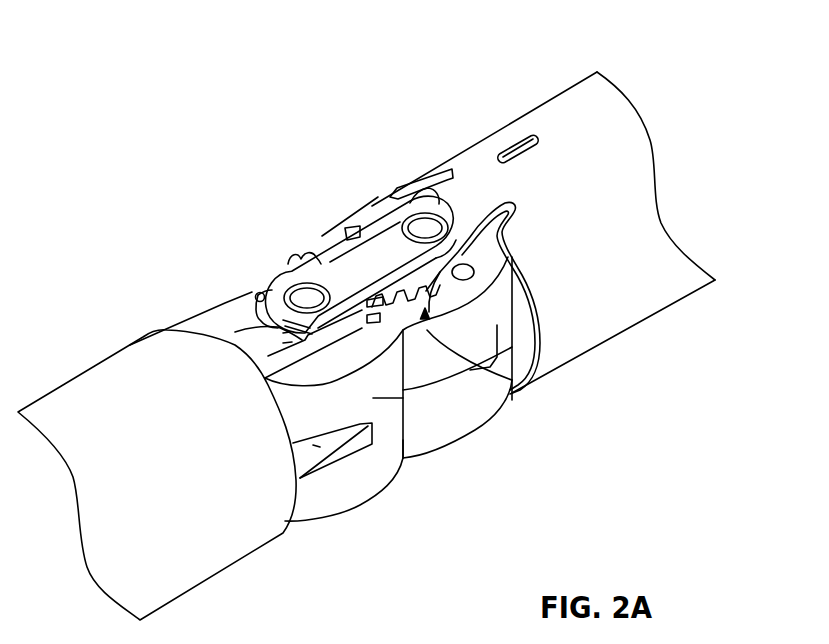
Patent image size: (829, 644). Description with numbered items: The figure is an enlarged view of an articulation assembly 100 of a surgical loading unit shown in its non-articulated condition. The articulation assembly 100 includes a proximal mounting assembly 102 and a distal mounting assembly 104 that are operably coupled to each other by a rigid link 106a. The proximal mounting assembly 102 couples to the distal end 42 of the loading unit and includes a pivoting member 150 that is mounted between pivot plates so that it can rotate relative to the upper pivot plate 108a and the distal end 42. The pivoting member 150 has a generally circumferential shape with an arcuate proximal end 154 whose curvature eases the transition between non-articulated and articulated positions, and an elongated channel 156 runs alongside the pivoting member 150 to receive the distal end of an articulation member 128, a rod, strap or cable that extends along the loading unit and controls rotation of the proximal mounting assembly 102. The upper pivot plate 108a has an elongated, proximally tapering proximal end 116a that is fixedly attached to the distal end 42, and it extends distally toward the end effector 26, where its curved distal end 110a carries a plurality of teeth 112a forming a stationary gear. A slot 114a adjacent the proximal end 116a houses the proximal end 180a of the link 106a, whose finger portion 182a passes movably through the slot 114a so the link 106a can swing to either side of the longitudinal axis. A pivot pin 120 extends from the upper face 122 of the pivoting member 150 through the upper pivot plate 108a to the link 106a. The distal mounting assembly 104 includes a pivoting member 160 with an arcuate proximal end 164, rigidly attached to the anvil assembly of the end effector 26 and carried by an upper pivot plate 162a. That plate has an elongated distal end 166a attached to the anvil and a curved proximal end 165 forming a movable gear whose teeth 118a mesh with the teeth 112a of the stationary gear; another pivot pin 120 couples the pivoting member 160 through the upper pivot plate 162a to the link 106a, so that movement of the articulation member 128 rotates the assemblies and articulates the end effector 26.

The end effector 26 is at (522, 62).
The distal end of the loading unit 42 is at (143, 337).
The articulation assembly 100 is at (233, 122).
The proximal mounting assembly 102 is at (135, 242).
The distal mounting assembly 104 is at (368, 155).
The link 106a is at (345, 270).
The upper pivot plate 108a is at (258, 291).
The circumferential distal end 110a is at (281, 268).
The teeth 112a is at (293, 262).
The slot 114a is at (261, 316).
The proximal end of upper pivot plate 116a is at (222, 335).
The teeth 118a is at (513, 388).
The pivot pin 120 is at (424, 222).
The upper face of pivoting member 122 is at (367, 355).
The articulation member 128 is at (312, 450).
The pivoting member 150 is at (373, 398).
The proximal end of pivoting member 154 is at (365, 430).
The elongated channel 156 is at (403, 458).
The pivoting member 160 is at (493, 310).
The upper pivot plate 162a is at (477, 197).
The proximal end of pivoting member 164 is at (437, 393).
The circumferential proximal end 165 is at (360, 227).
The distal end of upper pivot plate 166a is at (453, 205).
The proximal end of link 180a is at (283, 333).
The finger portion 182a is at (283, 343).